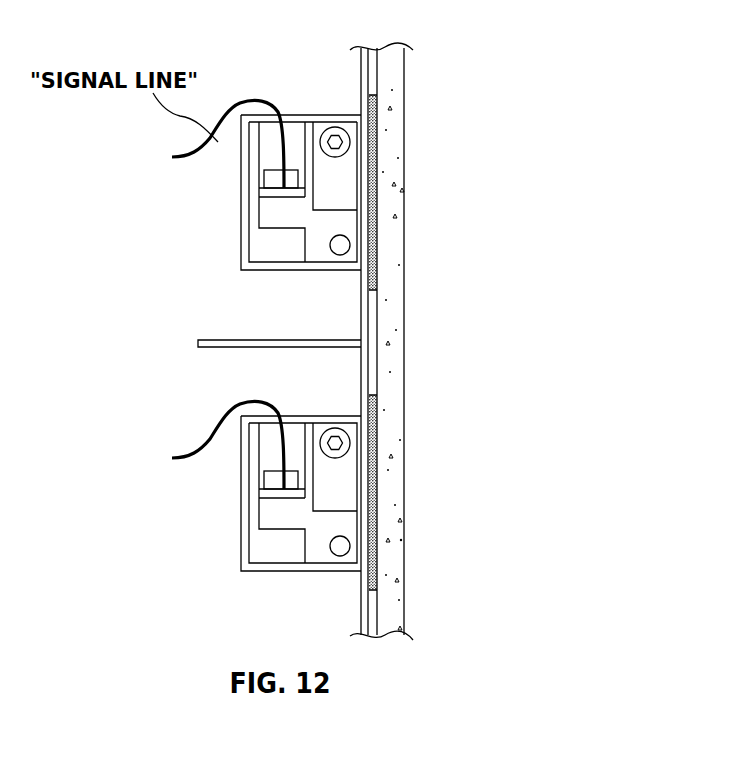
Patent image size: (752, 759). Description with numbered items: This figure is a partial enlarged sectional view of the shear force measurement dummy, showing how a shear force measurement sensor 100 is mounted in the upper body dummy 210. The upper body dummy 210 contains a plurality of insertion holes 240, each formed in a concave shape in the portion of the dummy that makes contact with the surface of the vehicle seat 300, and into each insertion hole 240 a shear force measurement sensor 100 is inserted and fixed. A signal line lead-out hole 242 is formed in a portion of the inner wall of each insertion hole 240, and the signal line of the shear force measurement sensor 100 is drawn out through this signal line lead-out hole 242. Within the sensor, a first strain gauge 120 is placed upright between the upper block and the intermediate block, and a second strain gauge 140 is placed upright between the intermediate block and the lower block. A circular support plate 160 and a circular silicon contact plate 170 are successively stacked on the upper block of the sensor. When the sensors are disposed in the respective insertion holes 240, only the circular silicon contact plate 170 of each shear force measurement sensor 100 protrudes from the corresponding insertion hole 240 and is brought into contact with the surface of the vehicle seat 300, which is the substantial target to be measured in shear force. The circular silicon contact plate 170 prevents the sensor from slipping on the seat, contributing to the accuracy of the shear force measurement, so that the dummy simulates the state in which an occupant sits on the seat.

The shear force measurement sensor 100 is at (285, 262).
The first strain gauge 120 is at (348, 184).
The second strain gauge 140 is at (272, 193).
The circular support plate 160 is at (372, 102).
The circular silicon contact plate 170 is at (404, 96).
The upper body dummy 210 is at (302, 154).
The insertion hole 240 is at (249, 239).
The signal line lead-out hole 242 is at (297, 118).
The vehicle seat 300 is at (394, 198).